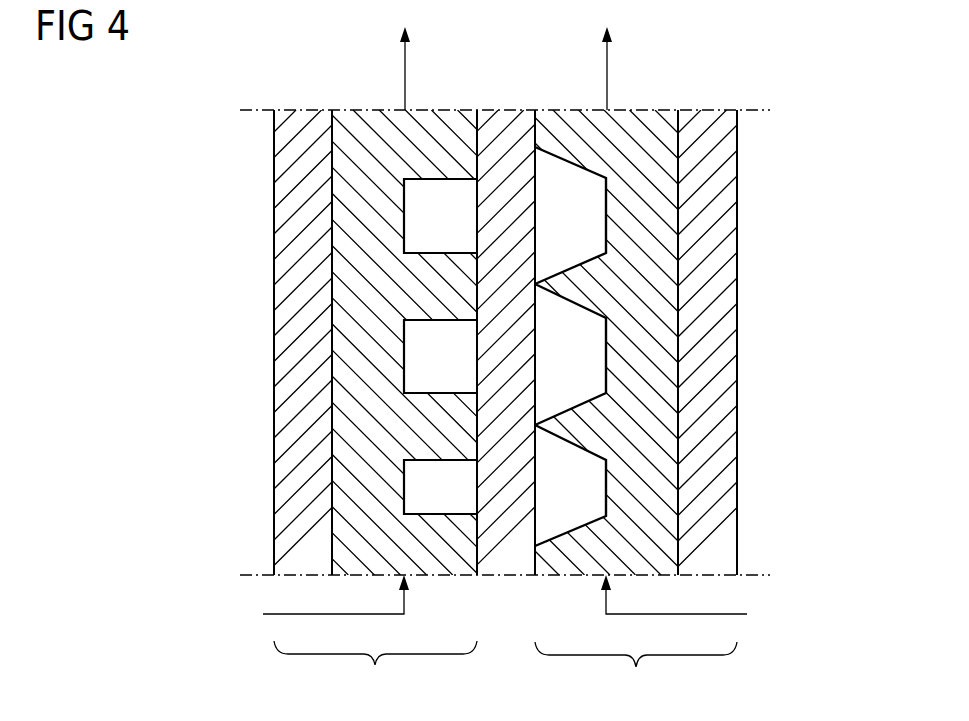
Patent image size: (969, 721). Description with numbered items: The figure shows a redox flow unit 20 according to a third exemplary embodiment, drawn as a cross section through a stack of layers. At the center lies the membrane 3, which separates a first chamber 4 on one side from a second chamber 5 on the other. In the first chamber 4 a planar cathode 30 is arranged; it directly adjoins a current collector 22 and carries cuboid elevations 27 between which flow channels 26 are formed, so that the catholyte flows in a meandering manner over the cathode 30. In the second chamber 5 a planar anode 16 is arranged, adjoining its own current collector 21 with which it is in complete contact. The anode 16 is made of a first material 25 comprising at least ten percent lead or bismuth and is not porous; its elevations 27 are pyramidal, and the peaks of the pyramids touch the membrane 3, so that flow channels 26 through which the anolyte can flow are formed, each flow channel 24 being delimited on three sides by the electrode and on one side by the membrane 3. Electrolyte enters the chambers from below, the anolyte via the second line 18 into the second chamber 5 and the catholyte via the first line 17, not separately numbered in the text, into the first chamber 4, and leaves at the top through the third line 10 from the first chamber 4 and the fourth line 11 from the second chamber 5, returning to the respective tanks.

The membrane 3 is at (500, 135).
The first chamber 4 is at (375, 674).
The second chamber 5 is at (636, 675).
The third line 10 is at (405, 58).
The fourth line 11 is at (607, 58).
The anode 16 is at (672, 155).
The direction arrow 17 is at (263, 614).
The second line 18 is at (747, 614).
The redox flow unit 20 is at (828, 55).
The current collector 21 is at (725, 272).
The current collector 22 is at (285, 325).
The flow channel 24 is at (422, 218).
The first material 25 is at (583, 545).
The flow channels 26 is at (587, 215).
The elevations 27 is at (472, 290).
The cathode 30 is at (368, 140).